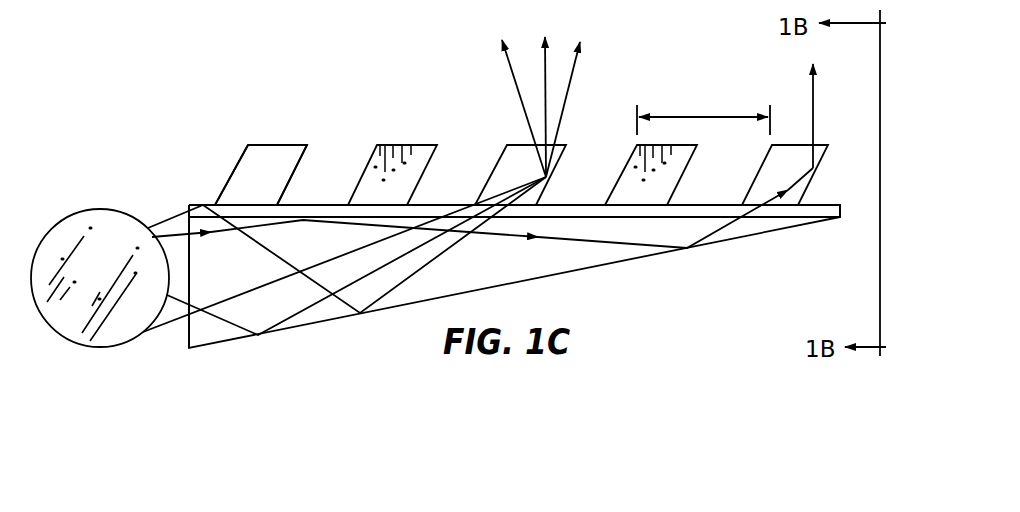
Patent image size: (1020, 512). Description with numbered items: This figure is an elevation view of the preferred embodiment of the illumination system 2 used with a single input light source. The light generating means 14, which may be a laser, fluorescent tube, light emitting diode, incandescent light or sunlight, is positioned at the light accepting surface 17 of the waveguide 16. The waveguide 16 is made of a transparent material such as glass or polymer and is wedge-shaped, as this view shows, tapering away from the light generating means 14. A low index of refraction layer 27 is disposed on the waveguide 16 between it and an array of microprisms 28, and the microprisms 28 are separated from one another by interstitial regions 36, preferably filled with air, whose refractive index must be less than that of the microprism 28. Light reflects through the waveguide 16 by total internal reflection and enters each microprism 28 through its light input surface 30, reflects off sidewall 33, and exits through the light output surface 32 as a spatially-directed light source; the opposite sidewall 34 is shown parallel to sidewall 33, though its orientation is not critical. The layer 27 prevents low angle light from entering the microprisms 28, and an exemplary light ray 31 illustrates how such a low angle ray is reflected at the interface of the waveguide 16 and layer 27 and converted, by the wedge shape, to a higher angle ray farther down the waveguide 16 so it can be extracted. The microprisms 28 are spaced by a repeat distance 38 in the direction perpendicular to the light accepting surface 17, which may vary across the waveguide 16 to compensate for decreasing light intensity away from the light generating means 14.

The illumination system 2 is at (699, 39).
The light generating means 14 is at (93, 207).
The waveguide 16 is at (600, 262).
The light accepting surface 17 is at (188, 333).
The low index of refraction layer 27 is at (836, 220).
The microprism 28 is at (813, 166).
The light input surface 30 is at (233, 204).
The exemplary light ray 31 is at (812, 95).
The light output surface 32 is at (295, 143).
The sidewall 33 is at (292, 167).
The sidewall 34 is at (239, 162).
The interstitial regions 36 is at (459, 153).
The repeat distance 38 is at (694, 116).